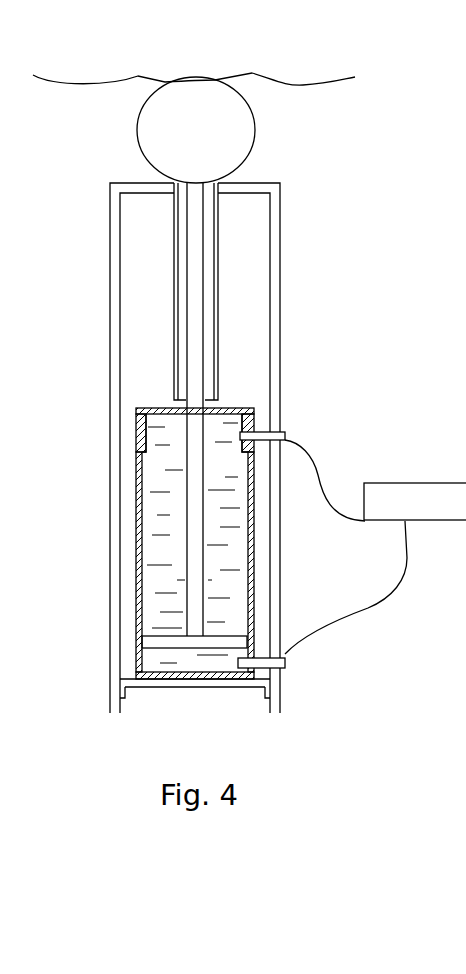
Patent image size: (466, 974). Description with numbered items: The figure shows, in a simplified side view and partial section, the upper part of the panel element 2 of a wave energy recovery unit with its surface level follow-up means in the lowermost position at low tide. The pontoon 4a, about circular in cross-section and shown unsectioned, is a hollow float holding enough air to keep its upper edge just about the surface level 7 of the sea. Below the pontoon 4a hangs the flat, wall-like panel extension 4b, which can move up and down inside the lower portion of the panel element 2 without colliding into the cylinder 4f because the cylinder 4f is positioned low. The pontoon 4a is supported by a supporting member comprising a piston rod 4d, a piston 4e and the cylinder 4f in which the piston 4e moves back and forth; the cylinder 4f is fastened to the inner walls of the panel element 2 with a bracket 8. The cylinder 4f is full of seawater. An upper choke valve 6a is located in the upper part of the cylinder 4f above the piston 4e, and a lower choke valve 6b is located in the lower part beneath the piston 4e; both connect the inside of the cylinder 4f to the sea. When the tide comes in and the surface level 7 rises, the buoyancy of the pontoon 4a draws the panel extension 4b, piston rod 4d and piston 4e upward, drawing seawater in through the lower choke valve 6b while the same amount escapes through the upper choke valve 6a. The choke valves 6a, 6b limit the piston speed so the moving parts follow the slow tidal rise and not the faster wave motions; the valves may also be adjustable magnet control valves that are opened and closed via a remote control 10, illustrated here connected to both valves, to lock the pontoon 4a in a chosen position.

The surface level 7 is at (95, 80).
The pontoon 4a is at (141, 147).
The piston rod 4d is at (190, 241).
The panel extension 4b is at (215, 355).
The panel element 2 is at (278, 261).
The upper choke valve 6a is at (285, 434).
The control unit 10 is at (398, 482).
The cylinder 4f is at (275, 580).
The piston 4e is at (147, 642).
The lower choke valve 6b is at (285, 664).
The bracket 8 is at (120, 678).